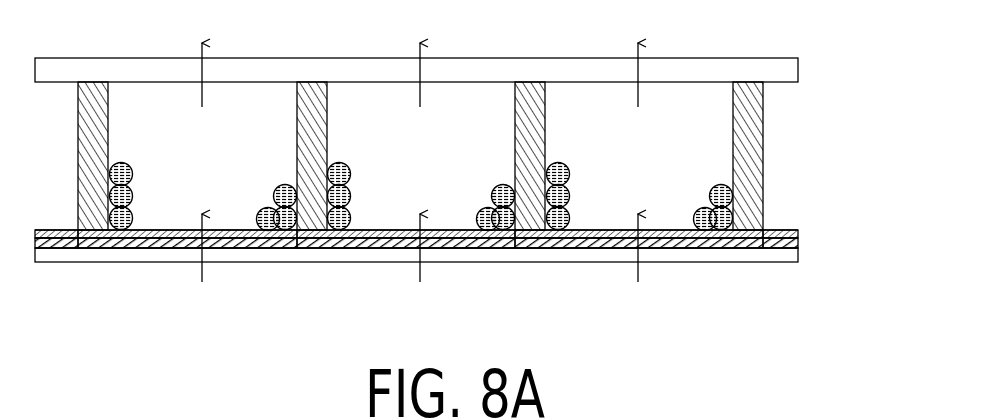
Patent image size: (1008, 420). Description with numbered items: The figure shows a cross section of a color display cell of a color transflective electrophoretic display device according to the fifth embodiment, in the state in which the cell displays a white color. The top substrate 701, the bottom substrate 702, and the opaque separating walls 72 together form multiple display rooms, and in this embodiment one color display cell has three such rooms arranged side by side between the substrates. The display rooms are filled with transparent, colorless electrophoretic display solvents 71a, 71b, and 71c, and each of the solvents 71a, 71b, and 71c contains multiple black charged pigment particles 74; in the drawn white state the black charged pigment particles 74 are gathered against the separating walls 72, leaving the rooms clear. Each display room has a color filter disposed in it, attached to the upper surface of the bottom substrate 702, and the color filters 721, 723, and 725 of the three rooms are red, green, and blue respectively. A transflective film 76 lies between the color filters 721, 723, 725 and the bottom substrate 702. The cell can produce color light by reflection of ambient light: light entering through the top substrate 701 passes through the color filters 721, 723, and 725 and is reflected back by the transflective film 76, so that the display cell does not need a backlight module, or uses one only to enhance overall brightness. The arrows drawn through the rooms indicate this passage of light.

The top substrate 701 is at (792, 70).
The bottom substrate 702 is at (778, 257).
The separating walls 72 is at (758, 168).
The transflective film 76 is at (462, 274).
The color filter 721 is at (158, 243).
The color filter 723 is at (383, 243).
The color filter 725 is at (588, 243).
The black charged pigment particles 74 is at (718, 232).
The electrophoretic display solvent 71a is at (152, 122).
The electrophoretic display solvent 71b is at (377, 122).
The electrophoretic display solvent 71c is at (593, 122).